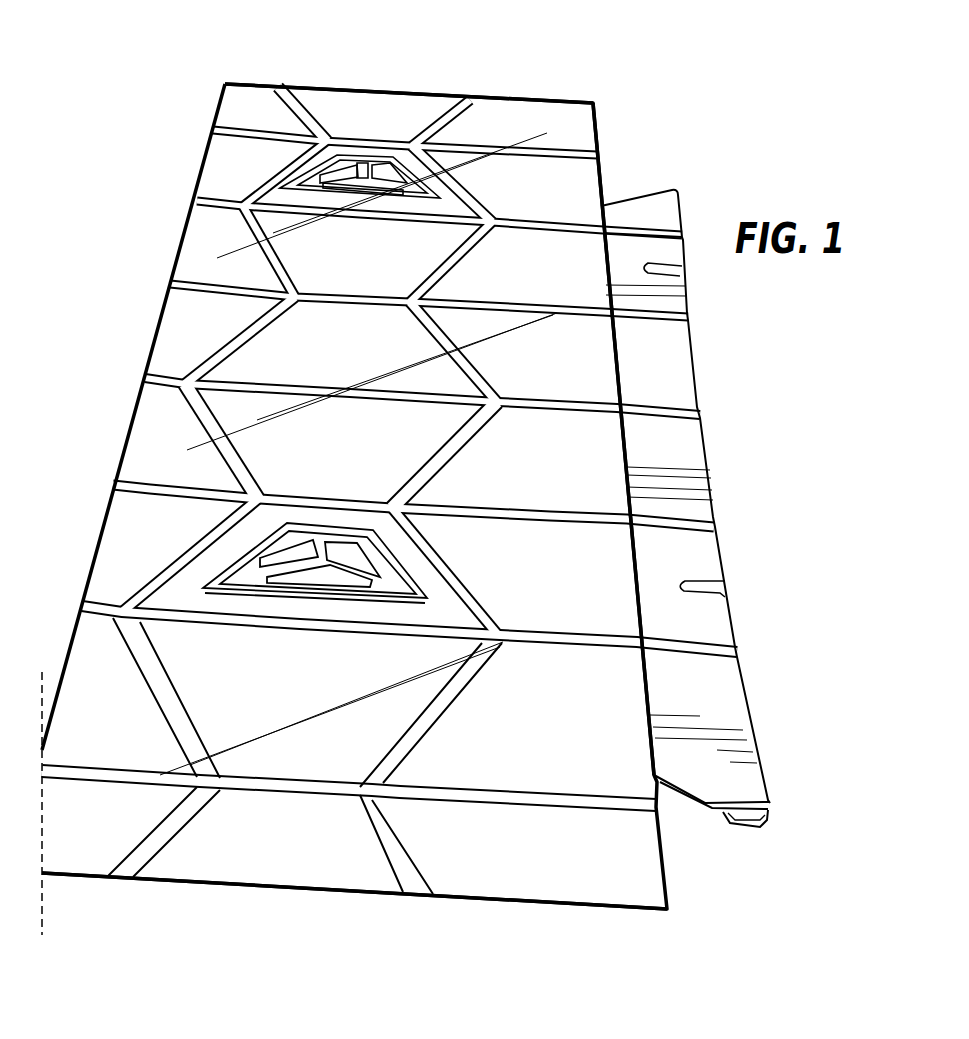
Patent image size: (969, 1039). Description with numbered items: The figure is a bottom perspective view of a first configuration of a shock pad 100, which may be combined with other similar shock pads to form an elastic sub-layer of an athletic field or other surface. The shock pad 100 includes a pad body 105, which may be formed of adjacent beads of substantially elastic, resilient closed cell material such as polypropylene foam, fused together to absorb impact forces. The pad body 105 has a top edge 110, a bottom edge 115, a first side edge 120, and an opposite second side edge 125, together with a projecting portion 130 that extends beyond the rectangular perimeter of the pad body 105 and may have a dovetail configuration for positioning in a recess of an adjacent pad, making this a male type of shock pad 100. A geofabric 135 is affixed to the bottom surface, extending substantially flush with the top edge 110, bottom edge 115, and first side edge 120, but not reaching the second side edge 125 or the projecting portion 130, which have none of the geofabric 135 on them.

The shock pad 100 is at (765, 90).
The pad body 105 is at (593, 130).
The top edge 110 is at (395, 75).
The bottom edge 115 is at (343, 935).
The first side edge 120 is at (133, 339).
The second side edge 125 is at (722, 394).
The projecting portion 130 is at (713, 817).
The geofabric 135 is at (176, 252).